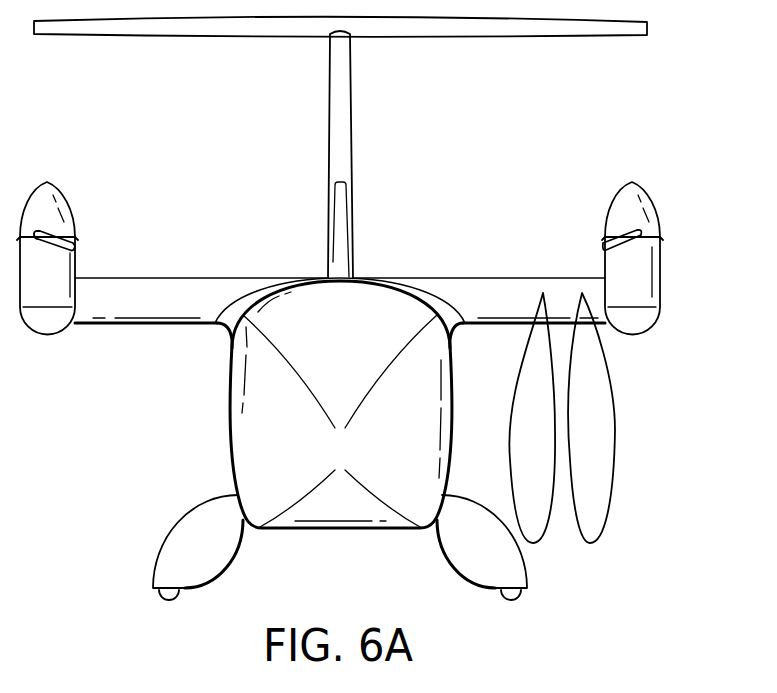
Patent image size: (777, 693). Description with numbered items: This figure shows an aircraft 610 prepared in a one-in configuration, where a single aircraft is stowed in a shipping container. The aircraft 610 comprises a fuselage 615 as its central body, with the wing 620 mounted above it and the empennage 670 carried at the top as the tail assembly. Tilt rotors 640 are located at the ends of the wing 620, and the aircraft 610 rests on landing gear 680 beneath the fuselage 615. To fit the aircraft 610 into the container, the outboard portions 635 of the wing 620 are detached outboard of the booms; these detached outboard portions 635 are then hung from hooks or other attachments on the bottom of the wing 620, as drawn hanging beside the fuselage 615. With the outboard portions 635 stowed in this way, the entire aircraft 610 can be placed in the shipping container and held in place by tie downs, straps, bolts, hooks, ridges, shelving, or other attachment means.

The aircraft 610 is at (124, 519).
The fuselage 615 is at (228, 433).
The wing 620 is at (490, 277).
The outboard portions 635 is at (542, 542).
The tilt rotors 640 is at (657, 212).
The empennage 670 is at (190, 40).
The landing gear 680 is at (196, 558).